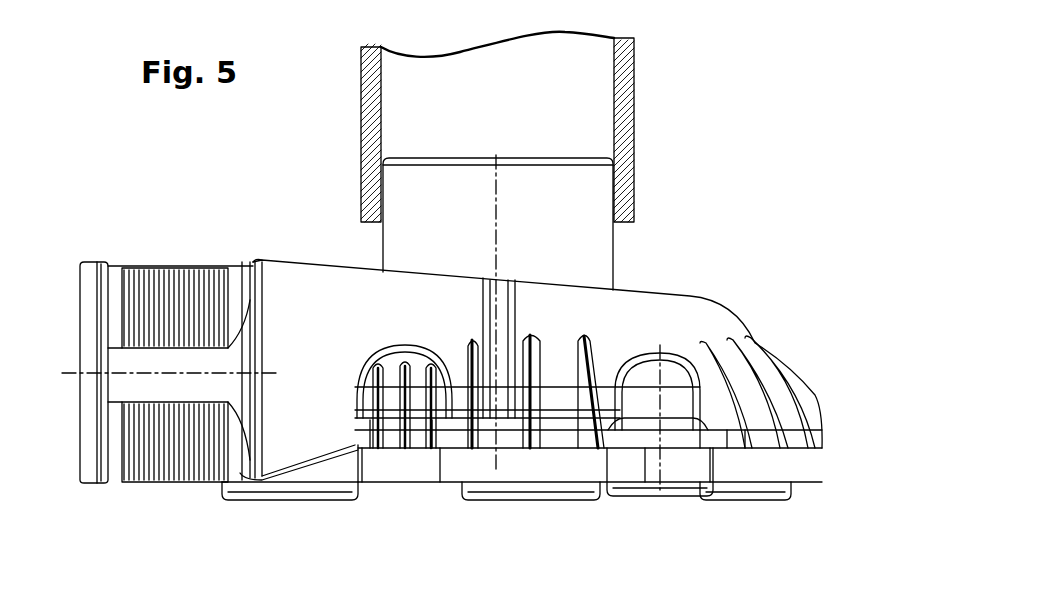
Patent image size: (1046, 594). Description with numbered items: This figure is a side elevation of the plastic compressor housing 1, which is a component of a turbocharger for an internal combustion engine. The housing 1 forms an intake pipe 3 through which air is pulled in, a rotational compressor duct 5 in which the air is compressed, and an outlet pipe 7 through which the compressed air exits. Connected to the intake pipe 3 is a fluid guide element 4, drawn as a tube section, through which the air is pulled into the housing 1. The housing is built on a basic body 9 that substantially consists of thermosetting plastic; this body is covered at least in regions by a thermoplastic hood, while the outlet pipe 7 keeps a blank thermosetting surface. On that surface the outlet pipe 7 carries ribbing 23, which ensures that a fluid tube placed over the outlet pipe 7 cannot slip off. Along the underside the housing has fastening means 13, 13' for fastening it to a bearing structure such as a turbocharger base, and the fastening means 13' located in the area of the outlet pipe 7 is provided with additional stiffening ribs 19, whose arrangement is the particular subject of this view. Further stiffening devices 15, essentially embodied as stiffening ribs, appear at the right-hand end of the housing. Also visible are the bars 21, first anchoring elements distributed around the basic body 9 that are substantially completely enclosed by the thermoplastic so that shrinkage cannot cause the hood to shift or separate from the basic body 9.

The plastic compressor housing 1 is at (764, 223).
The intake pipe 3 is at (566, 180).
The fluid guide element 4 is at (636, 80).
The rotational compressor duct 5 is at (676, 340).
The outlet pipe 7 is at (106, 284).
The basic body 9 is at (122, 387).
The fastening means 13 is at (476, 382).
The fastening means 13' is at (401, 498).
The stiffening devices 15 is at (808, 402).
The stiffening ribs 19 is at (390, 350).
The bars 21 is at (265, 496).
The ribbing 23 is at (186, 283).